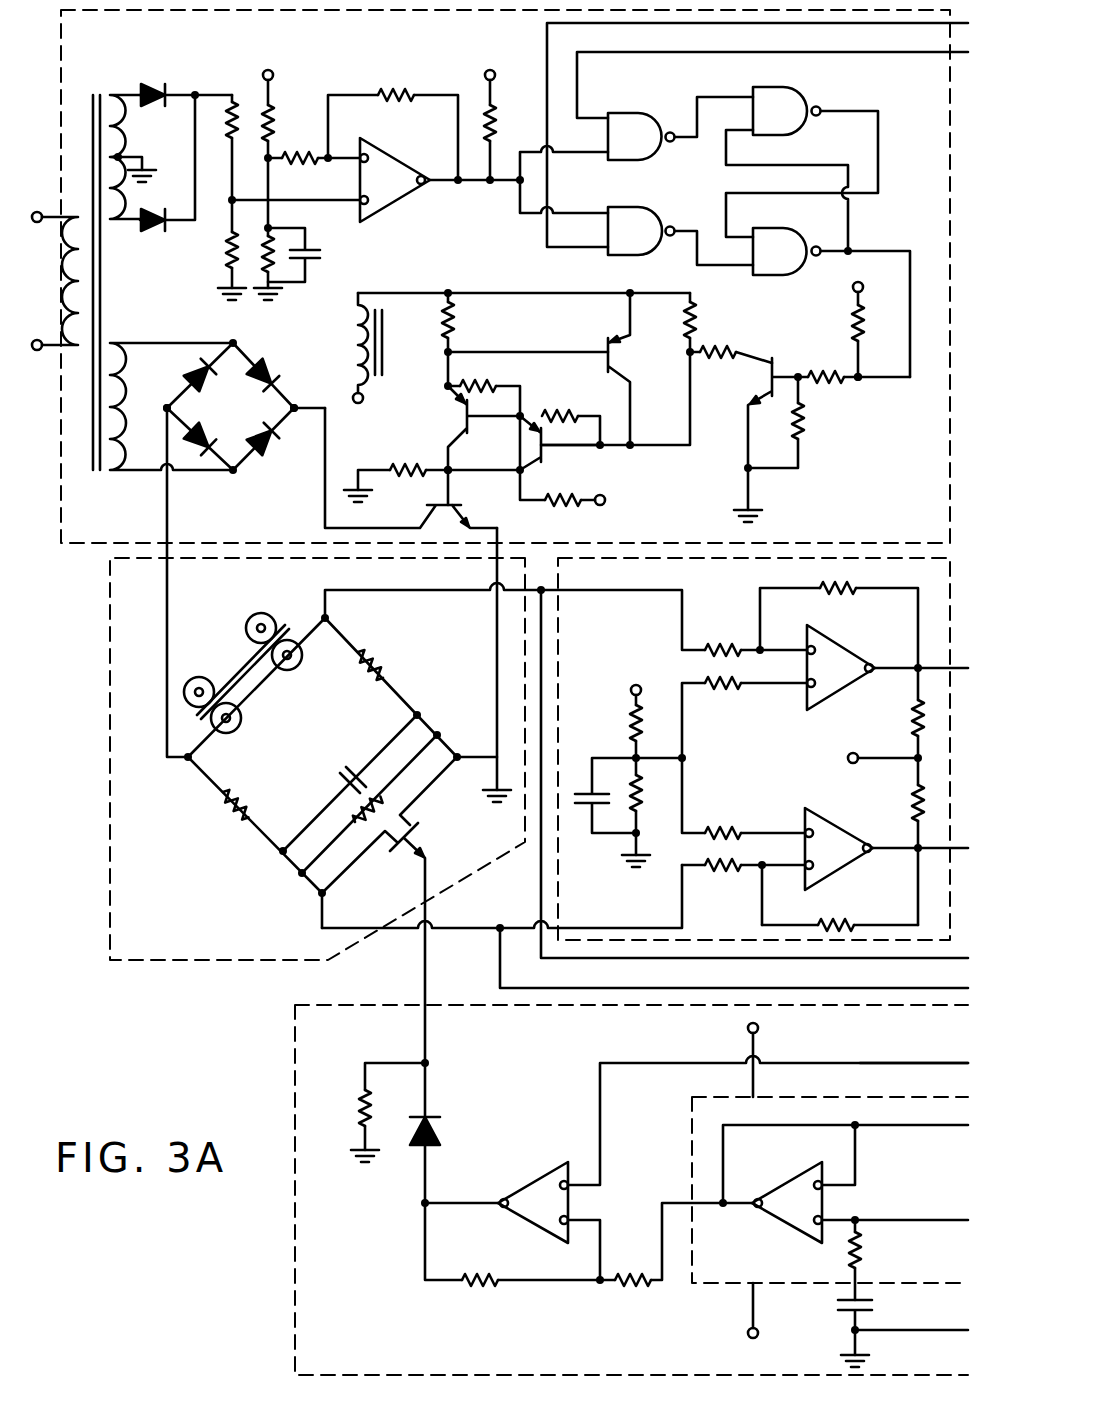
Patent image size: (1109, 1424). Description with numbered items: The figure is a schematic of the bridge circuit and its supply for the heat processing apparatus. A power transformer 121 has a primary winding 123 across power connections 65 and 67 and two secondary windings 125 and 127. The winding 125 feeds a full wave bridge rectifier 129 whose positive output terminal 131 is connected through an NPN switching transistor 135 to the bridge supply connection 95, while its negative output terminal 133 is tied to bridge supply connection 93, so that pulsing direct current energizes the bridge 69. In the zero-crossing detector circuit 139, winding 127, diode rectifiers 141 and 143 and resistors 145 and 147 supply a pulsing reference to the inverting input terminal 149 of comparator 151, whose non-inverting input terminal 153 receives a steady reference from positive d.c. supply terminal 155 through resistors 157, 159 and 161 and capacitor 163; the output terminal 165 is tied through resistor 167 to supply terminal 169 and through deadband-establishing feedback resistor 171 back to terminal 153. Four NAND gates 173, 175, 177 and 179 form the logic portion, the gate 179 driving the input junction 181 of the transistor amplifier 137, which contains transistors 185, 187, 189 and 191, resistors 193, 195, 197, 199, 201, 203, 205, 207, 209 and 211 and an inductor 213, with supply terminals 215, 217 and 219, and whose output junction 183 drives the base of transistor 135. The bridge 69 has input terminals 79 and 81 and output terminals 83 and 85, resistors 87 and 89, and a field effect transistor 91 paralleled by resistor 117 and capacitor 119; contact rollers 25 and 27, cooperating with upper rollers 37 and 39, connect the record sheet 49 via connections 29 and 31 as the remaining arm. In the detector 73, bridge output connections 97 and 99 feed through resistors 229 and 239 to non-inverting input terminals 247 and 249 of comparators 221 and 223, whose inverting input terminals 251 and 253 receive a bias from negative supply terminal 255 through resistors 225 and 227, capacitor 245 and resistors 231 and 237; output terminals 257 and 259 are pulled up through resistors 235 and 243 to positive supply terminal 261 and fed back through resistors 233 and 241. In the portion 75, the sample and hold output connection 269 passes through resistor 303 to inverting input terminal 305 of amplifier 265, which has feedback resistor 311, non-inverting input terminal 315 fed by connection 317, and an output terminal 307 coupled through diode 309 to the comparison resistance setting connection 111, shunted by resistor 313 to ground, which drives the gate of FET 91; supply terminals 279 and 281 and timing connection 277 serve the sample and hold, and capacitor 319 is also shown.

The power connection 65 is at (64, 210).
The power connection 67 is at (62, 354).
The primary winding 123 is at (72, 278).
The power transformer 121 is at (126, 305).
The secondary winding 127 is at (118, 134).
The secondary winding 125 is at (118, 428).
The diode rectifier 141 is at (148, 84).
The diode rectifier 143 is at (156, 238).
The resistor 145 is at (246, 106).
The resistor 147 is at (224, 257).
The positive d.c. supply terminal 155 is at (272, 70).
The resistor 157 is at (276, 126).
The resistor 159 is at (302, 169).
The resistor 161 is at (255, 292).
The capacitor 163 is at (314, 250).
The inverting input terminal 149 is at (364, 206).
The comparator 151 is at (404, 208).
The non-inverting input terminal 153 is at (368, 154).
The output terminal 165 is at (424, 183).
The deadband-establishing feedback resistor 171 is at (396, 90).
The zero-crossing detector circuit 139 is at (456, 68).
The positive d.c. supply terminal 169 is at (492, 72).
The resistor 167 is at (499, 128).
The NAND gate 173 is at (626, 115).
The NAND gate 175 is at (790, 88).
The NAND gate 177 is at (638, 208).
The NAND gate 179 is at (780, 227).
The d.c. supply terminal 215 is at (852, 284).
The resistor 193 is at (854, 328).
The resistor 195 is at (836, 374).
The input junction 181 is at (862, 380).
The transistor 185 is at (768, 374).
The resistor 197 is at (808, 425).
The resistor 199 is at (725, 348).
The resistor 201 is at (698, 326).
The transistor 187 is at (618, 353).
The resistor 203 is at (562, 409).
The resistor 205 is at (490, 373).
The resistor 207 is at (454, 320).
The inductor 213 is at (386, 356).
The d.c. supply terminal 219 is at (362, 403).
The transistor 191 is at (454, 425).
The output junction 183 is at (455, 470).
The transistor 189 is at (546, 450).
The resistor 211 is at (418, 478).
The NPN switching transistor 135 is at (456, 502).
The bridge supply connection 95 is at (506, 529).
The resistor 209 is at (572, 508).
The d.c. supply terminal 217 is at (606, 506).
The transistor amplifier 137 is at (843, 464).
The full wave bridge rectifier 129 is at (287, 360).
The negative output terminal 133 is at (168, 406).
The positive output terminal 131 is at (294, 412).
The bridge supply connection 93 is at (168, 526).
The upper roller 39 is at (250, 616).
The connection 31 is at (320, 622).
The first output terminal 83 is at (333, 622).
The resistor 89 is at (378, 656).
The upper roller 37 is at (196, 680).
The record sheet 49 is at (238, 674).
The contact roller 27 is at (296, 670).
The contact roller 25 is at (230, 730).
The connection 29 is at (204, 760).
The first input terminal 79 is at (186, 764).
The capacitor 119 is at (362, 764).
The resistor 117 is at (388, 798).
The second input terminal 81 is at (472, 756).
The field effect transistor 91 is at (418, 828).
The resistor 87 is at (232, 822).
The second output terminal 85 is at (314, 900).
The bridge 69 is at (110, 827).
The detector 73 is at (542, 892).
The bridge output connection 99 is at (580, 928).
The comparison resistance setting connection 111 is at (422, 984).
The bridge output connection 97 is at (650, 590).
The resistor 229 is at (702, 644).
The non-inverting input terminal 247 is at (812, 646).
The feedback resistor 233 is at (842, 600).
The output terminal 257 is at (872, 664).
The negative d.c. supply terminal 255 is at (630, 690).
The resistor 225 is at (626, 732).
The resistor 231 is at (732, 688).
The inverting input terminal 251 is at (812, 686).
The comparator 221 is at (823, 702).
The resistor 235 is at (914, 720).
The positive d.c. supply terminal 261 is at (855, 754).
The resistor 243 is at (914, 805).
The resistor 237 is at (730, 822).
The inverting input terminal 253 is at (796, 828).
The output terminal 259 is at (866, 844).
The comparator 223 is at (858, 852).
The capacitor 245 is at (582, 818).
The resistor 227 is at (646, 808).
The resistor 239 is at (742, 870).
The non-inverting input terminal 249 is at (810, 873).
The feedback resistor 241 is at (846, 918).
The portion 75 is at (290, 1058).
The resistor 313 is at (356, 1112).
The diode 309 is at (444, 1132).
The output terminal 307 is at (504, 1198).
The non-inverting input terminal 315 is at (566, 1176).
The operational amplifier 265 is at (536, 1236).
The inverting input terminal 305 is at (570, 1228).
The resistor 311 is at (484, 1284).
The resistor 303 is at (640, 1284).
The output connection 269 is at (684, 1200).
The d.c. supply terminal 279 is at (746, 1028).
The connection 317 is at (860, 1062).
The timing connection 277 is at (866, 1290).
The capacitor 319 is at (874, 1310).
The d.c. supply terminal 281 is at (748, 1336).